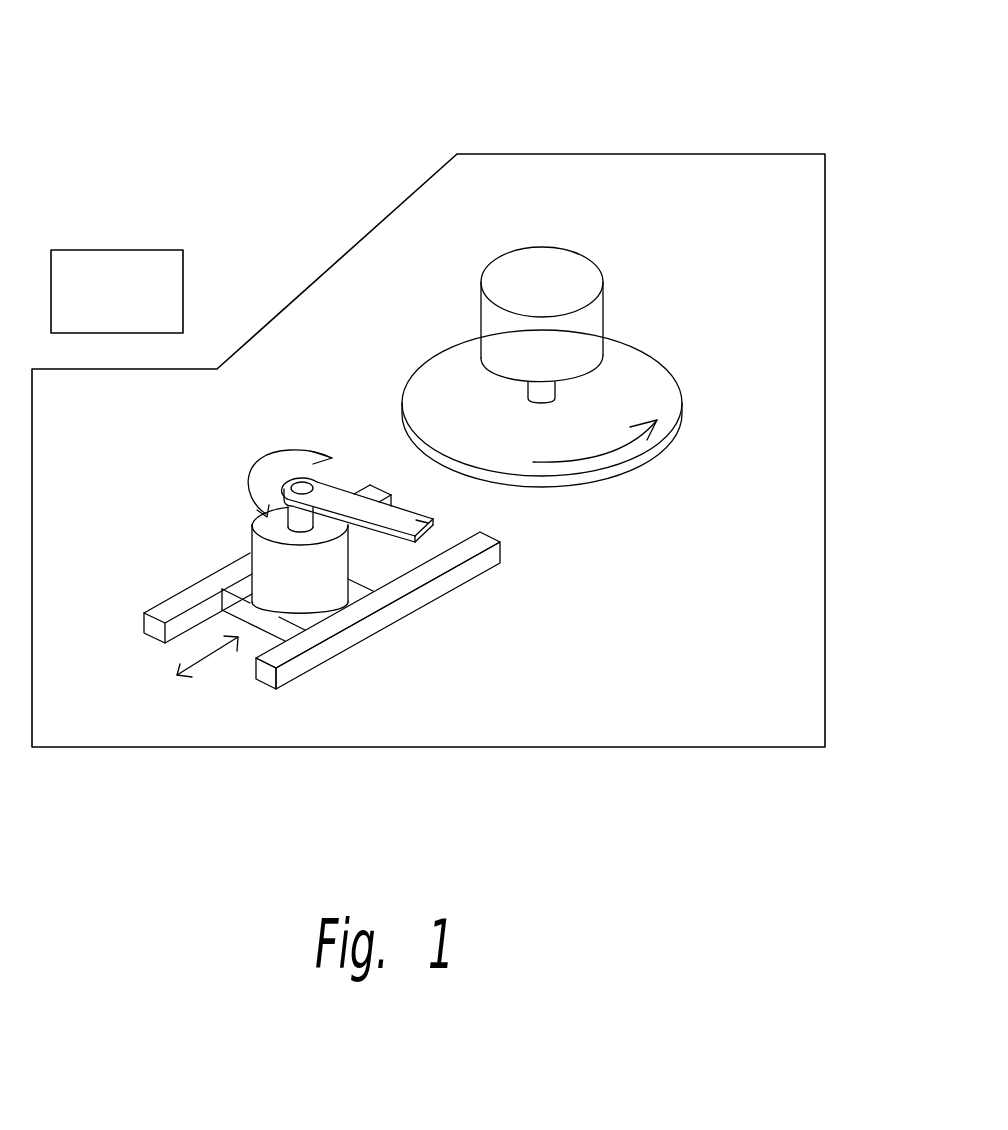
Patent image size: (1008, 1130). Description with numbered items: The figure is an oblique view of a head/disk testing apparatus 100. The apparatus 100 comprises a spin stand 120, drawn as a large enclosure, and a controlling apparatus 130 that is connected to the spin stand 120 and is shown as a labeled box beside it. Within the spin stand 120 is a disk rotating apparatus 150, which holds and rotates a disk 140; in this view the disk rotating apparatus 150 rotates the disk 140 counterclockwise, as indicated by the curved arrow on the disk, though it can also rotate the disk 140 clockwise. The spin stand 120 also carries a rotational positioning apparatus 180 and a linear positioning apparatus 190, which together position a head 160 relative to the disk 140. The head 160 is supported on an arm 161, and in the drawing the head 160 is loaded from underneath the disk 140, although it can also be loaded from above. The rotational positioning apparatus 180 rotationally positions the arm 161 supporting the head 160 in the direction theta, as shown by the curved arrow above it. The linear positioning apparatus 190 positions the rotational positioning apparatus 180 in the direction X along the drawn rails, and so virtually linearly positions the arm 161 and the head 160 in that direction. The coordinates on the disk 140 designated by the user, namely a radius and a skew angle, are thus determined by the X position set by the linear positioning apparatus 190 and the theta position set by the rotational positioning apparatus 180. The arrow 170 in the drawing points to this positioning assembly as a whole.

The head/disk testing apparatus 100 is at (78, 55).
The spin stand 120 is at (826, 181).
The controlling apparatus 130 is at (160, 250).
The disk 140 is at (655, 375).
The disk rotating apparatus 150 is at (558, 268).
The head 160 is at (430, 514).
The arm 161 is at (348, 505).
The positioning stage 170 is at (525, 614).
The rotational positioning apparatus 180 is at (330, 602).
The linear positioning apparatus 190 is at (403, 604).